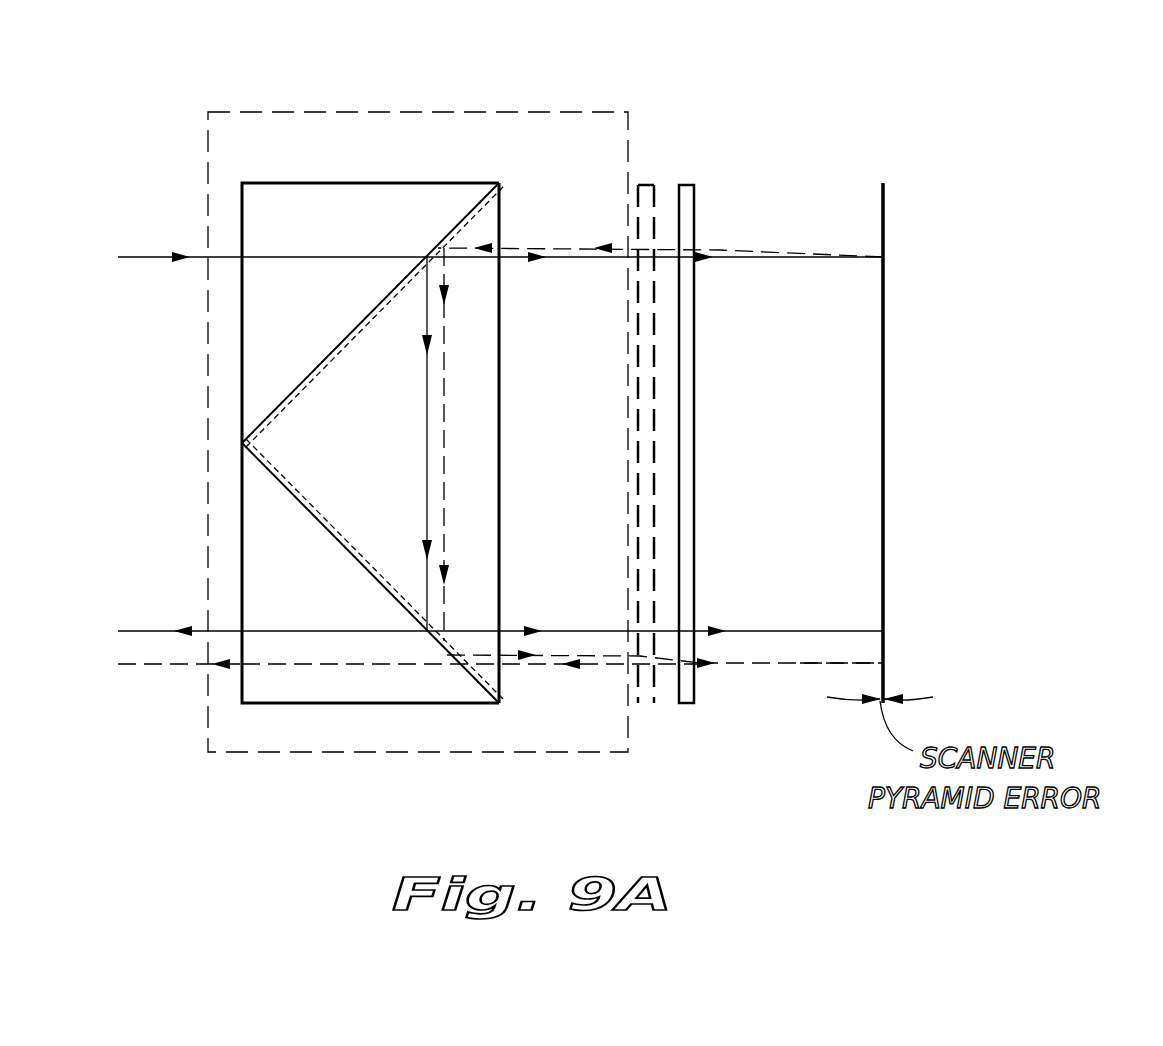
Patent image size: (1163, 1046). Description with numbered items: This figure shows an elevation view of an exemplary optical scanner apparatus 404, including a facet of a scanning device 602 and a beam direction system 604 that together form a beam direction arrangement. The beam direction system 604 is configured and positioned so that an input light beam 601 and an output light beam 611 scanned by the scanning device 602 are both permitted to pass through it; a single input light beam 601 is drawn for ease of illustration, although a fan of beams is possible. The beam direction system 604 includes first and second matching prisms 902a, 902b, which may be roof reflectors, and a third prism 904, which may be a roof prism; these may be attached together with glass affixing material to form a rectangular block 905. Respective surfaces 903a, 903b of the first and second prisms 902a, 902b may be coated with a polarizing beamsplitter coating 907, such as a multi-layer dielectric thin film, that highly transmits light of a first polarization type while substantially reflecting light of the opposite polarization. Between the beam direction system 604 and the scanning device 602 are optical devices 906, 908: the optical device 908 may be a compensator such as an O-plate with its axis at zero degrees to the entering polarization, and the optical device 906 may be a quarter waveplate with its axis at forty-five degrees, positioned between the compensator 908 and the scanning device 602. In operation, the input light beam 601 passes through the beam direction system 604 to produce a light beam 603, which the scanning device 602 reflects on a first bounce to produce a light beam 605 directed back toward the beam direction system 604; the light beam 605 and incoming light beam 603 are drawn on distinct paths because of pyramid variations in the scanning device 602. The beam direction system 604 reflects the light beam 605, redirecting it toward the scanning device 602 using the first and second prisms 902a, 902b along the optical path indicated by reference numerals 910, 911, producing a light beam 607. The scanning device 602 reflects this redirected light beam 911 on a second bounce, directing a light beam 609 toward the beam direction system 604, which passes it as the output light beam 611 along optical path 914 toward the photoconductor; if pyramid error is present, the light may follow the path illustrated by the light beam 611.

The optical scanner apparatus 404 is at (930, 73).
The input light beam 601 is at (140, 256).
The scanning device 602 is at (883, 195).
The light beam 603 is at (735, 262).
The beam direction system 604 is at (543, 110).
The light beam 605 is at (720, 252).
The light beam 607 is at (745, 662).
The light beam 609 is at (800, 668).
The output light beam 611 is at (172, 667).
The first matching prism 902a is at (350, 244).
The second matching prism 902b is at (352, 622).
The surface of first prism 903a is at (290, 396).
The surface of second prism 903b is at (290, 492).
The third prism 904 is at (410, 377).
The rectangular block 905 is at (435, 183).
The quarter waveplate 906 is at (688, 185).
The polarizing beamsplitter coating 907 is at (370, 302).
The compensator 908 is at (650, 705).
The optical path 910 is at (427, 490).
The redirected light beam 911 is at (823, 630).
The optical path 914 is at (157, 629).